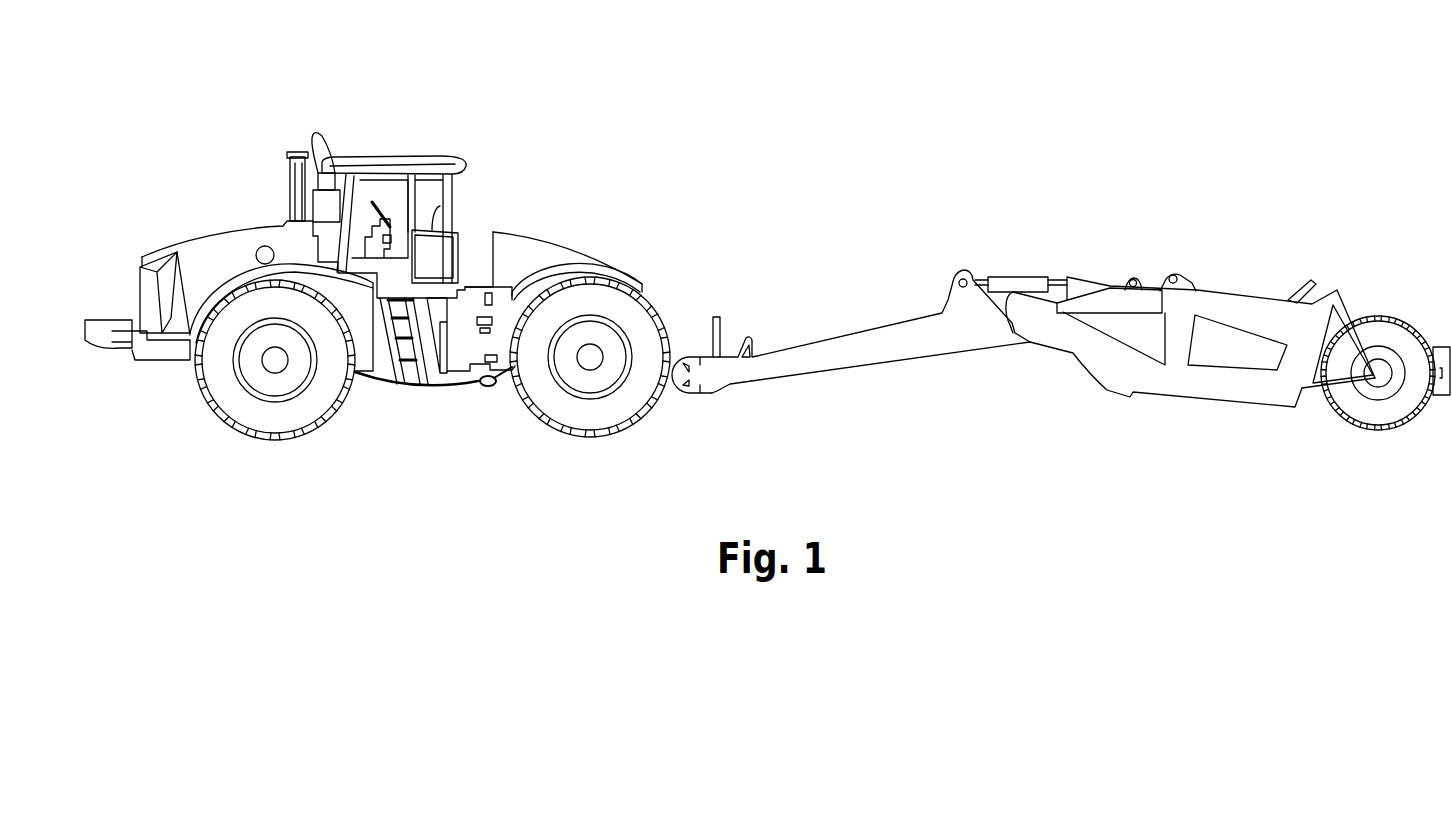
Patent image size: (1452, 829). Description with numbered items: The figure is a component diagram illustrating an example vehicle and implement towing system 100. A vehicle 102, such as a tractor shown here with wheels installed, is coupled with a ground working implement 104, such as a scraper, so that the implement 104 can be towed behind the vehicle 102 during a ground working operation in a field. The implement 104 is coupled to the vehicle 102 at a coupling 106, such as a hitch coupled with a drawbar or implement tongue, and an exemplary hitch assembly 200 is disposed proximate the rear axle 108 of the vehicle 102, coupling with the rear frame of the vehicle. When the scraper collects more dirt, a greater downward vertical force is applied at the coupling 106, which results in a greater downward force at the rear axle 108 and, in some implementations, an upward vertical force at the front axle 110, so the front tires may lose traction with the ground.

The vehicle and implement towing system 100 is at (327, 90).
The vehicle 102 is at (168, 200).
The ground working implement 104 is at (1245, 248).
The coupling 106 is at (683, 311).
The rear axle 108 is at (612, 458).
The front axle 110 is at (253, 455).
The hitch assembly 200 is at (741, 312).